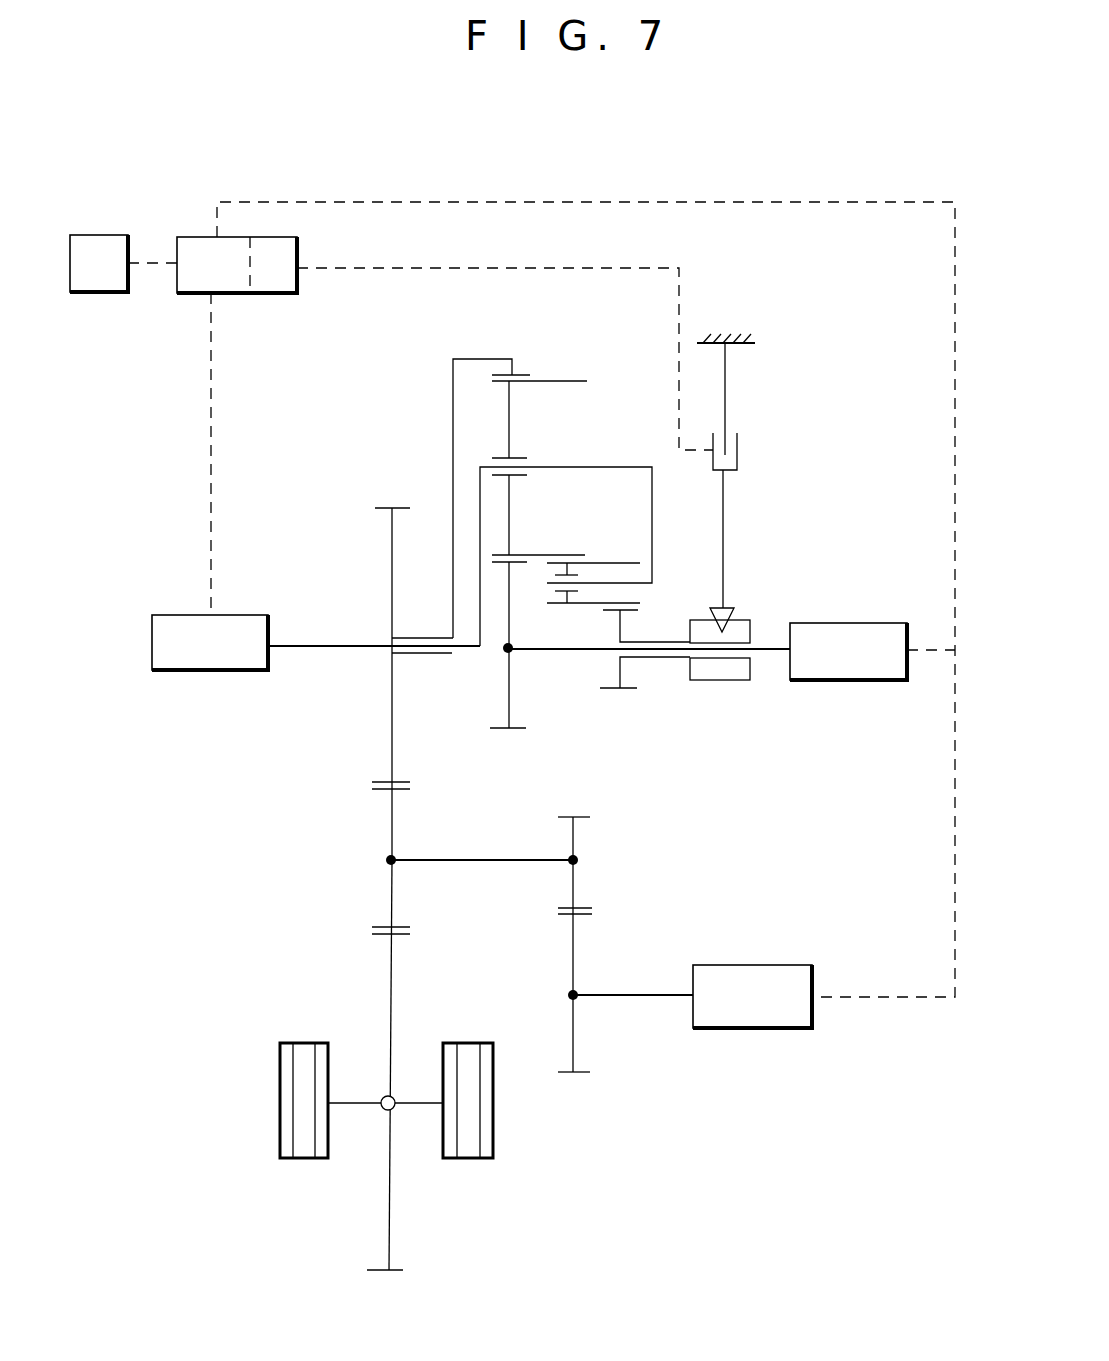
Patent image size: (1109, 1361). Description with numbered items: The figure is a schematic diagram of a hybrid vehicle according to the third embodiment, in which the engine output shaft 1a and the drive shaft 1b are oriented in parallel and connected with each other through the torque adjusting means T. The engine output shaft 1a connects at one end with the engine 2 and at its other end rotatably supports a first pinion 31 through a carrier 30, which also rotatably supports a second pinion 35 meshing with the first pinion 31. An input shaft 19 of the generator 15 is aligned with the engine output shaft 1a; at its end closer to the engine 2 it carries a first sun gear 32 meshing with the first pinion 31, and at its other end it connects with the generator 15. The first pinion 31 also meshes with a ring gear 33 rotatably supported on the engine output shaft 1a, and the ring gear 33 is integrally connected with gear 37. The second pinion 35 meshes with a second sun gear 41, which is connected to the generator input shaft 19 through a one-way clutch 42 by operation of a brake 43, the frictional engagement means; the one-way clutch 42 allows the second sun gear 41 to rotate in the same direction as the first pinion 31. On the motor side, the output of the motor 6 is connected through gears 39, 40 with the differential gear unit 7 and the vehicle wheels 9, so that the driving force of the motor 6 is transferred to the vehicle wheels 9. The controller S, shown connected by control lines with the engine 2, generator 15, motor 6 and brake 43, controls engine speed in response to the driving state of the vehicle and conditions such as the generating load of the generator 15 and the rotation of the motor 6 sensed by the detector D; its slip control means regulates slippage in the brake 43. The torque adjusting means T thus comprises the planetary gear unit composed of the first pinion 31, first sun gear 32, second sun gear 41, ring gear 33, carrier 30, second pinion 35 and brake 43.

The engine output shaft 1a is at (333, 648).
The drive shaft 1b is at (660, 997).
The engine 2 is at (243, 615).
The motor 6 is at (775, 965).
The differential gear unit 7 is at (380, 1110).
The vehicle wheels 9 is at (305, 1160).
The generator 15 is at (857, 623).
The input shaft of the generator 19 is at (765, 655).
The carrier 30 is at (480, 646).
The first pinion 31 is at (558, 383).
The first sun gear 32 is at (512, 733).
The ring gear 33 is at (520, 372).
The second pinion 35 is at (596, 562).
The gear 37 is at (373, 769).
The gear 39 is at (583, 918).
The gear 40 is at (378, 840).
The second sun gear 41 is at (625, 690).
The one-way clutch 42 is at (746, 620).
The brake 43 is at (739, 456).
The torque adjusting means T is at (428, 437).
The detector D is at (99, 263).
The controller S is at (237, 265).